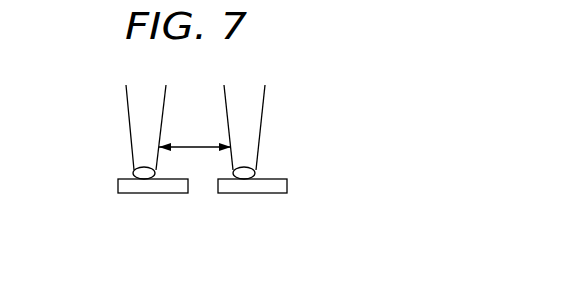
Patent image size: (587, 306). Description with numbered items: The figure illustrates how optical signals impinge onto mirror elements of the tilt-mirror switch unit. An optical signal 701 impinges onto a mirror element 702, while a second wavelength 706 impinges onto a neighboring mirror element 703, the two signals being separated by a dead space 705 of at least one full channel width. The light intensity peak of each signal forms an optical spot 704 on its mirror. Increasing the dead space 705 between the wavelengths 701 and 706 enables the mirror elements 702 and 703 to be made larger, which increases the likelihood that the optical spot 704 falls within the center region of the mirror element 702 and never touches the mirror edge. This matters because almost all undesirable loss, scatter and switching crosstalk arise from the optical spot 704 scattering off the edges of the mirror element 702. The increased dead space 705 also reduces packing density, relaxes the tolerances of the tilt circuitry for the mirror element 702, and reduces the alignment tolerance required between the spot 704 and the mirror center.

The optical signal 701 is at (128, 129).
The mirror element 702 is at (153, 193).
The mirror element 703 is at (252, 193).
The optical spot 704 is at (137, 170).
The dead space 705 is at (195, 143).
The wavelength 706 is at (261, 130).